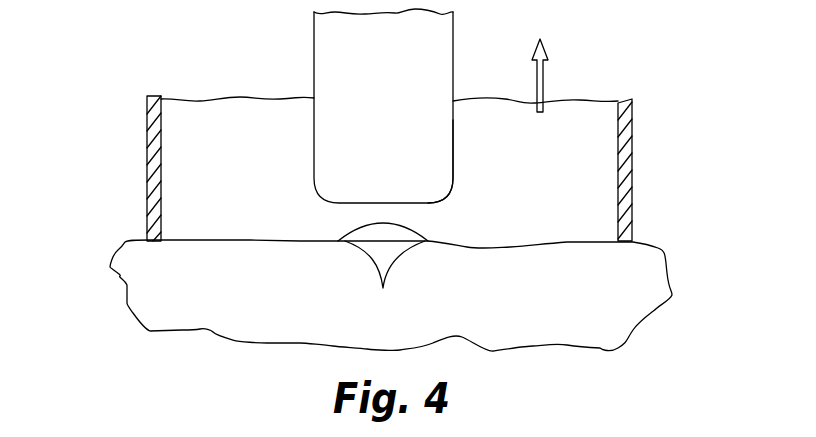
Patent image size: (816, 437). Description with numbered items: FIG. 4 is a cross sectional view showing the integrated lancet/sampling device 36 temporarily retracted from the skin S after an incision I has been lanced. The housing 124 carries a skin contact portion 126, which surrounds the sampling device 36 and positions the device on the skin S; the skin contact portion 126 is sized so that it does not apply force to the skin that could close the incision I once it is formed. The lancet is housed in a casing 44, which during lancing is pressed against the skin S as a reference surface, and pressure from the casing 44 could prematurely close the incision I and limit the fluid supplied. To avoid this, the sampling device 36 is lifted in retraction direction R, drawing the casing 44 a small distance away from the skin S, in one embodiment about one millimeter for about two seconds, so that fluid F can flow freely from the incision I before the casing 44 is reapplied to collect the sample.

The housing 124 is at (160, 164).
The skin contact portion 126 is at (630, 183).
The integrated lancet/sampling device 36 is at (314, 131).
The casing 44 is at (454, 141).
The retraction direction R is at (543, 84).
The skin S is at (148, 257).
The fluid droplet F is at (355, 233).
The incision I is at (377, 252).